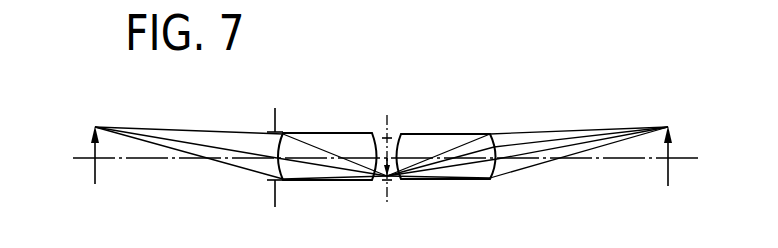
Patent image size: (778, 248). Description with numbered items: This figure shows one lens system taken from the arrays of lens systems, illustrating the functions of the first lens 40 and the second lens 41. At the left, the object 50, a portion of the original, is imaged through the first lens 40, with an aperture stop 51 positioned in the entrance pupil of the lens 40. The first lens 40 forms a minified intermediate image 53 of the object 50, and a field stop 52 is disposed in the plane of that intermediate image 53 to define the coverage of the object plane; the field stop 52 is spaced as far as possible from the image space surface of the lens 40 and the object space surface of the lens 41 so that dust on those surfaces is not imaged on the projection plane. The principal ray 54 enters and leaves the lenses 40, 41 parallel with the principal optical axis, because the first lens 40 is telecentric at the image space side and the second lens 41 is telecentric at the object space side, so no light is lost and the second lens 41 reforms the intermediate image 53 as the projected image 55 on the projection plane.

The first lens 40 is at (327, 181).
The second lens 41 is at (440, 181).
The object 50 is at (93, 174).
The aperture stop 51 is at (273, 192).
The field stop 52 is at (387, 118).
The intermediate image 53 is at (392, 150).
The principal ray 54 is at (235, 149).
The projected image 55 is at (671, 127).